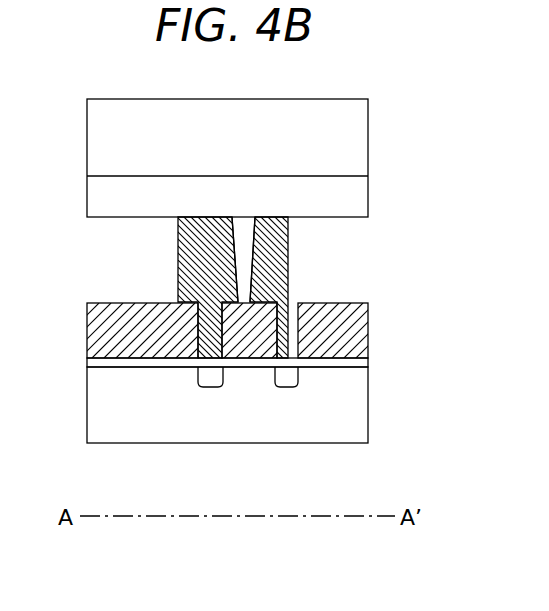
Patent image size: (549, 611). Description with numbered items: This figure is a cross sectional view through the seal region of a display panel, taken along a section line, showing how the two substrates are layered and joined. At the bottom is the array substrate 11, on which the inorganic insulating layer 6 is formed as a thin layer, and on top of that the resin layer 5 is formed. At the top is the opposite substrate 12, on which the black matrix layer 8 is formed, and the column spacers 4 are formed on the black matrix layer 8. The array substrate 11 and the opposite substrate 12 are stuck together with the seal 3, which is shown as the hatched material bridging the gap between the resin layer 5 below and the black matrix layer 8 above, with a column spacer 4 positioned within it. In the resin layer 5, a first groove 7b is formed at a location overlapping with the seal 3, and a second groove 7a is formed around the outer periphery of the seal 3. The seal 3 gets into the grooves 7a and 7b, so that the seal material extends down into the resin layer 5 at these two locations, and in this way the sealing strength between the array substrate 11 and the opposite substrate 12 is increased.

The opposite substrate 12 is at (375, 99).
The black matrix layer 8 is at (99, 193).
The column spacer 4 is at (248, 243).
The seal 3 is at (273, 263).
The resin layer 5 is at (342, 308).
The inorganic insulating layer 6 is at (97, 361).
The array substrate 11 is at (375, 303).
The second groove 7a is at (287, 387).
The first groove 7b is at (210, 387).